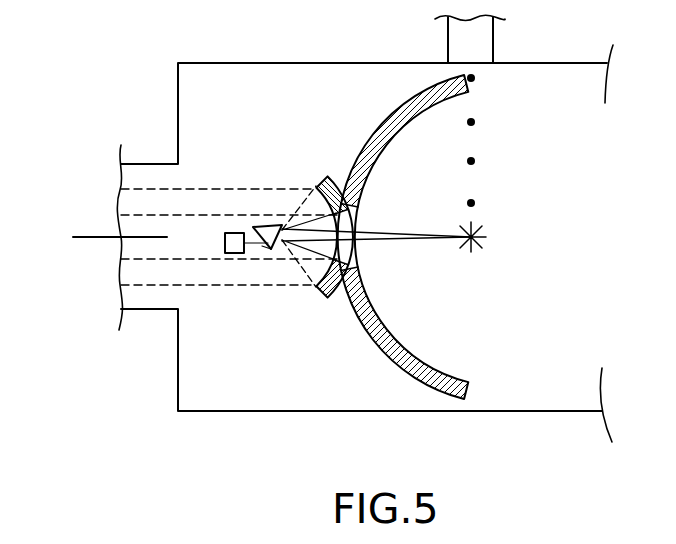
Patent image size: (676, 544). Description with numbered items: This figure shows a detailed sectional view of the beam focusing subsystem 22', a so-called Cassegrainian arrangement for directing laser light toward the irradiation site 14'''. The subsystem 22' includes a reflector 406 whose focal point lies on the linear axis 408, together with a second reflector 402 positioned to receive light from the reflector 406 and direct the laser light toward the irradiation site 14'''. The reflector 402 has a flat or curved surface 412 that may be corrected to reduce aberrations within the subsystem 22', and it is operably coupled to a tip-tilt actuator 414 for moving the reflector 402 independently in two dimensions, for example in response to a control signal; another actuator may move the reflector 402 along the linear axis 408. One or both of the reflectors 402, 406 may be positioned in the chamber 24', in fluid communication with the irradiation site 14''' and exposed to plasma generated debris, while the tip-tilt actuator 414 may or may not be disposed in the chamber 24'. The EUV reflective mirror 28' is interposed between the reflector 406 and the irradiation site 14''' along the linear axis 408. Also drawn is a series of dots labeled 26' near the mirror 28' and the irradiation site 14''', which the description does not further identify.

The chamber 24' is at (365, 228).
The linear axis 408 is at (88, 238).
The beam focusing subsystem 22' is at (229, 153).
The tip-tilt actuator 414 is at (233, 233).
The reflector 402 is at (258, 227).
The surface 412 is at (271, 250).
The reflector 406 is at (334, 188).
The EUV reflective mirror 28' is at (354, 276).
The irradiation site 14''' is at (518, 272).
The detector array 26' is at (524, 140).